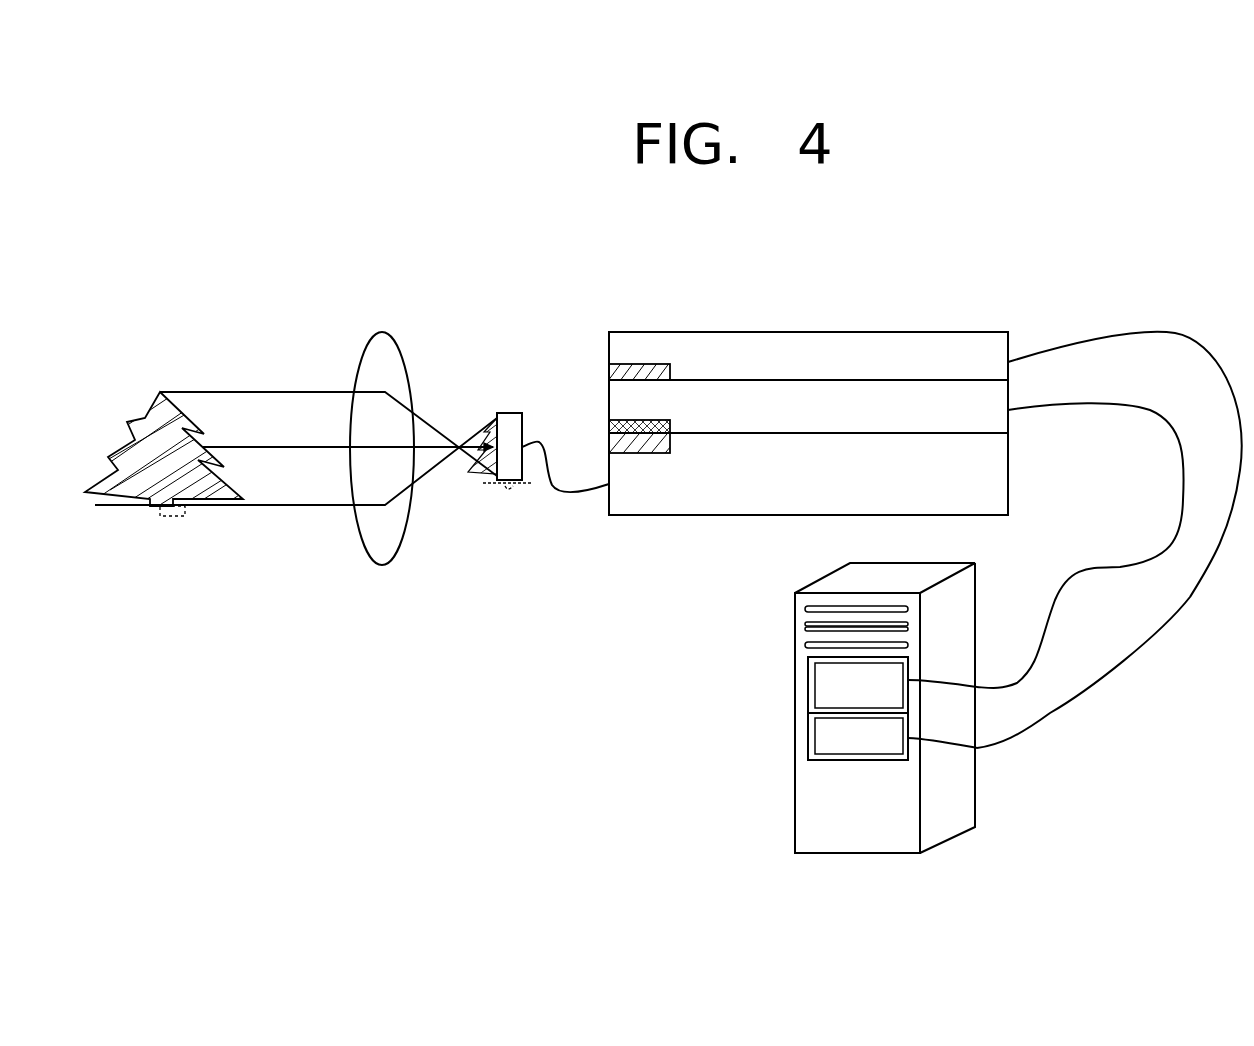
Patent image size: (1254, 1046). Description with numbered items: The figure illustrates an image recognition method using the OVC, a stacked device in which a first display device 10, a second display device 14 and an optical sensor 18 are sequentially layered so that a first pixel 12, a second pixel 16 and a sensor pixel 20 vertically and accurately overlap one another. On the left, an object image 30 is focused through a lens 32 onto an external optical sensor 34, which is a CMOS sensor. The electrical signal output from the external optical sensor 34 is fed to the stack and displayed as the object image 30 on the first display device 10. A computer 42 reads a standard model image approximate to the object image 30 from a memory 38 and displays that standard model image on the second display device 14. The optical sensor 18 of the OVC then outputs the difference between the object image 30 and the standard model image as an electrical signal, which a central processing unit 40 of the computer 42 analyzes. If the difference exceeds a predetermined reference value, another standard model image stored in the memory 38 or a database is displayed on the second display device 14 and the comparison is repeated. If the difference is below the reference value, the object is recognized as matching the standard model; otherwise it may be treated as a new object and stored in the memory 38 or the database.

The first display device 10 is at (1010, 487).
The first pixel 12 is at (609, 445).
The second display device 14 is at (1010, 425).
The second pixel 16 is at (609, 425).
The optical sensor 18 is at (973, 350).
The sensor pixel 20 is at (609, 365).
The object image 30 is at (147, 405).
The lens 32 is at (367, 342).
The external optical sensor 34 is at (510, 412).
The memory 38 is at (806, 683).
The central processing unit 40 is at (806, 733).
The computer 42 is at (808, 797).